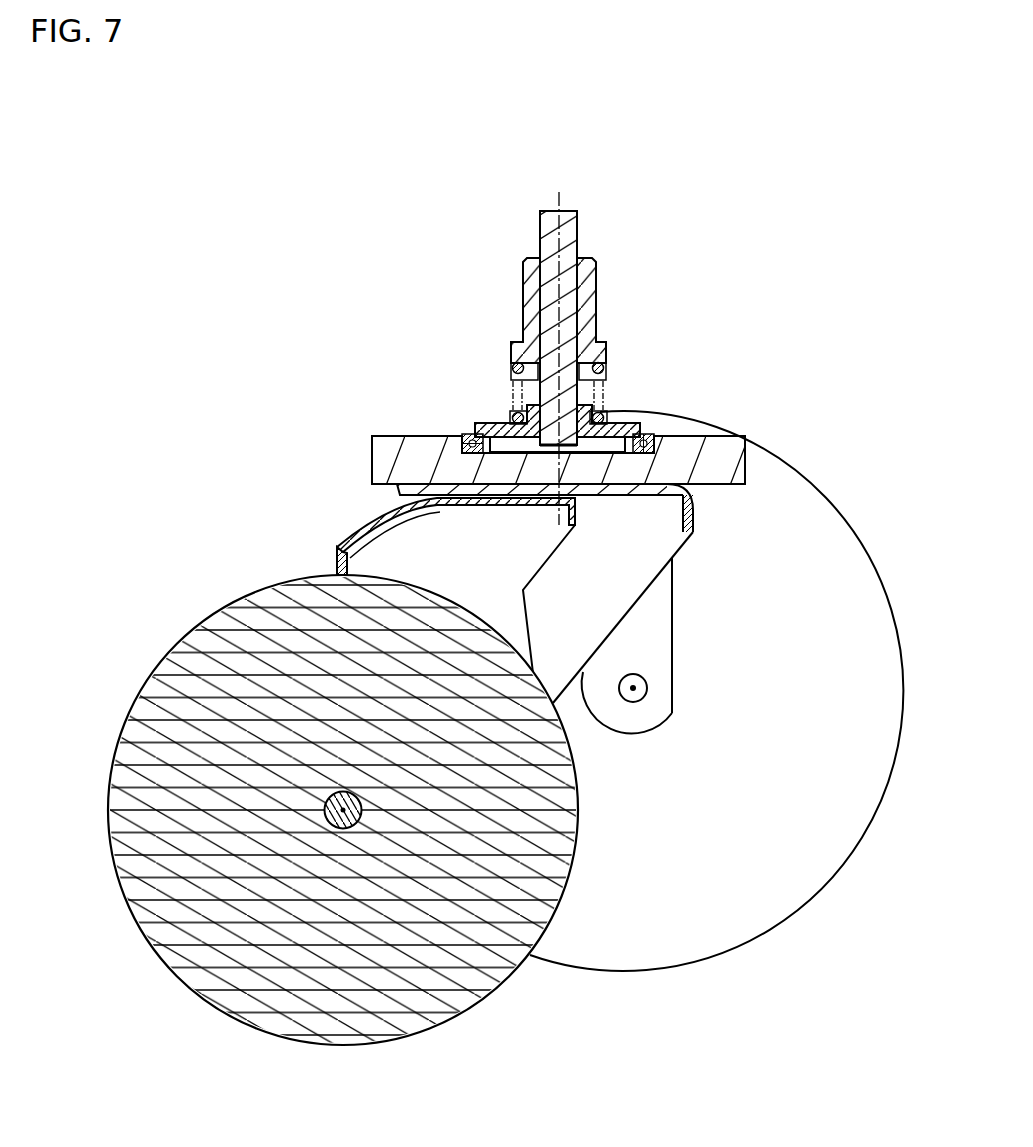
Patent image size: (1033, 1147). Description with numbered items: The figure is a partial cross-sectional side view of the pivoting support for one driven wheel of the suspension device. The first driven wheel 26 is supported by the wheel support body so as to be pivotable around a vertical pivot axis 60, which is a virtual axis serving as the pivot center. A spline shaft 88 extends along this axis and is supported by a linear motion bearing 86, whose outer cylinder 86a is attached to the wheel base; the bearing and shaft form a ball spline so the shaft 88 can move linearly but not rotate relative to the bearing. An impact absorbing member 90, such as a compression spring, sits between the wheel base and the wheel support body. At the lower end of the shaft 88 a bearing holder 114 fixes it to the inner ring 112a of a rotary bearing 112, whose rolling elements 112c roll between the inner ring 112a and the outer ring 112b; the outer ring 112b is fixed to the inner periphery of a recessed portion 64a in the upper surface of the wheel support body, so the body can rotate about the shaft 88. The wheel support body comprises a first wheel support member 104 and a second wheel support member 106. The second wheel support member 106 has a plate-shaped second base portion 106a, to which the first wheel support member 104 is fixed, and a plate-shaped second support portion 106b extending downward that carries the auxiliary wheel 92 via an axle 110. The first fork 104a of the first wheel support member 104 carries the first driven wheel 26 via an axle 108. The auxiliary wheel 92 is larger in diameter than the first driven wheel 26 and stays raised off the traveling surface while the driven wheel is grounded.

The first driven wheel 26 is at (430, 1030).
The pivot axis 60 is at (560, 200).
The recessed portion 64a is at (612, 446).
The linear motion bearing 86 is at (620, 320).
The outer cylinder 86a is at (596, 298).
The shaft 88 is at (577, 233).
The impact absorbing member 90 is at (604, 367).
The auxiliary wheel 92 is at (870, 840).
The first wheel support member 104 is at (573, 707).
The first fork 104a is at (385, 555).
The second wheel support member 106 is at (541, 494).
The second base portion 106a is at (372, 462).
The second support portion 106b is at (672, 625).
The axle 108 is at (358, 818).
The axle 110 is at (647, 693).
The rotary bearing 112 is at (542, 390).
The inner ring 112a is at (472, 434).
The outer ring 112b is at (463, 447).
The rolling elements 112c is at (462, 453).
The bearing holder 114 is at (627, 432).